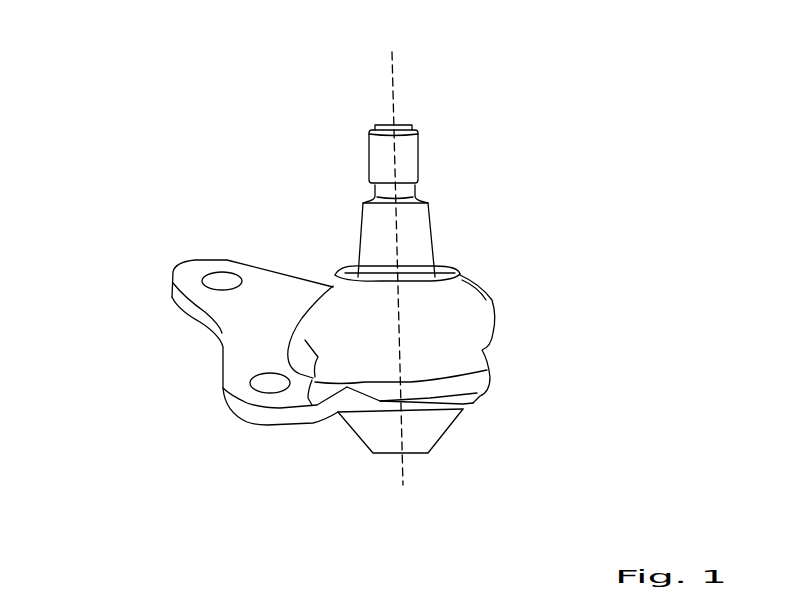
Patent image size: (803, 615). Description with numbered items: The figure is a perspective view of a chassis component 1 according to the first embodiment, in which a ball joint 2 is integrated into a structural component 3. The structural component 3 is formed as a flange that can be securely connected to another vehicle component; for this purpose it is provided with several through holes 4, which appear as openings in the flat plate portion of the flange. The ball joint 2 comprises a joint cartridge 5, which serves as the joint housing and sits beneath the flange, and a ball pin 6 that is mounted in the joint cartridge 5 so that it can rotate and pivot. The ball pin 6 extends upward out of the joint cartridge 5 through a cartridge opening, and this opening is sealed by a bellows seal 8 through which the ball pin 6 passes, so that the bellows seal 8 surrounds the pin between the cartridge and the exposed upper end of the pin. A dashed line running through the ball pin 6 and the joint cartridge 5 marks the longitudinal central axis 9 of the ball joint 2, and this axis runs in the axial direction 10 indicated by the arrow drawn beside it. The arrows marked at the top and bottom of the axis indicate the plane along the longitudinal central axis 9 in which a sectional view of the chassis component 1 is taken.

The chassis component 1 is at (118, 68).
The ball joint 2 is at (440, 239).
The structural component 3 is at (243, 410).
The through holes 4 is at (220, 280).
The joint cartridge 5 is at (433, 432).
The ball pin 6 is at (420, 168).
The bellows seal 8 is at (493, 322).
The longitudinal central axis 9 is at (392, 97).
The axial direction 10 is at (487, 58).